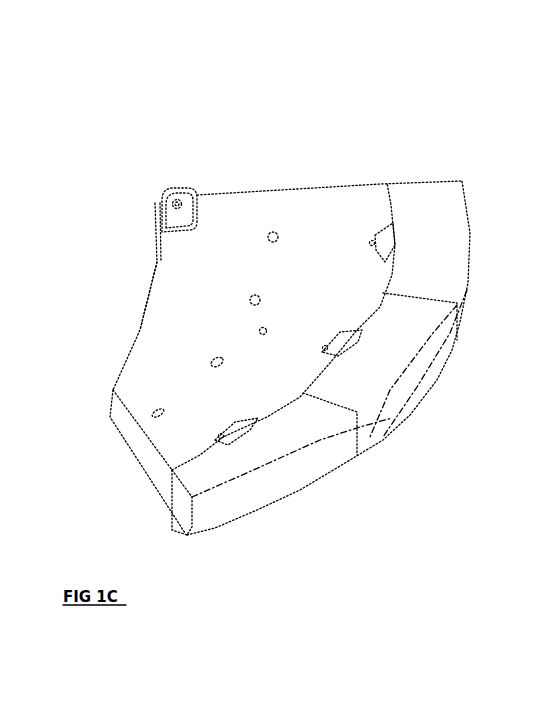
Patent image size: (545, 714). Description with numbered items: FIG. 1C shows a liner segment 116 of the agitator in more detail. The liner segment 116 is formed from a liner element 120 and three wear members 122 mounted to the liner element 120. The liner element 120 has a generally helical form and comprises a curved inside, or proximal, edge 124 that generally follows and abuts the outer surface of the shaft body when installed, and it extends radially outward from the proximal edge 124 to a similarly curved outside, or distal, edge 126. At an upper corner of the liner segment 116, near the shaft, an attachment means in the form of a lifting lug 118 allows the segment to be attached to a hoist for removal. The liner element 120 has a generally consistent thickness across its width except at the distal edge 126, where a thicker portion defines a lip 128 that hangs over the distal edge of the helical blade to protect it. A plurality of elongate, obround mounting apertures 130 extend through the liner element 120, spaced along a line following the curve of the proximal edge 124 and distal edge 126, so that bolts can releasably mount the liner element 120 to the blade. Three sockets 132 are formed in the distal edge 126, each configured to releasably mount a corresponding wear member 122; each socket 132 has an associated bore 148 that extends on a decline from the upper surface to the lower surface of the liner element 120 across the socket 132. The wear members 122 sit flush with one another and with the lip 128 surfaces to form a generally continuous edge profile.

The liner segment 116 is at (215, 172).
The lifting lug 118 is at (181, 195).
The liner element 120 is at (268, 215).
The wear member 122 is at (415, 207).
The inside (proximal) edge 124 is at (150, 258).
The outside (distal) edge 126 is at (289, 405).
The lip 128 is at (158, 488).
The mounting apertures 130 is at (262, 297).
The socket 132 is at (396, 228).
The bore 148 is at (377, 242).